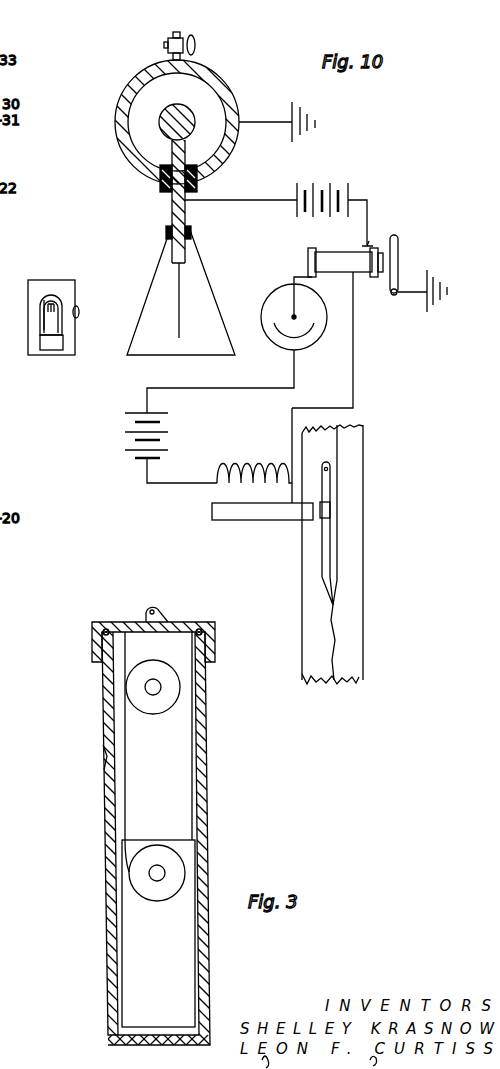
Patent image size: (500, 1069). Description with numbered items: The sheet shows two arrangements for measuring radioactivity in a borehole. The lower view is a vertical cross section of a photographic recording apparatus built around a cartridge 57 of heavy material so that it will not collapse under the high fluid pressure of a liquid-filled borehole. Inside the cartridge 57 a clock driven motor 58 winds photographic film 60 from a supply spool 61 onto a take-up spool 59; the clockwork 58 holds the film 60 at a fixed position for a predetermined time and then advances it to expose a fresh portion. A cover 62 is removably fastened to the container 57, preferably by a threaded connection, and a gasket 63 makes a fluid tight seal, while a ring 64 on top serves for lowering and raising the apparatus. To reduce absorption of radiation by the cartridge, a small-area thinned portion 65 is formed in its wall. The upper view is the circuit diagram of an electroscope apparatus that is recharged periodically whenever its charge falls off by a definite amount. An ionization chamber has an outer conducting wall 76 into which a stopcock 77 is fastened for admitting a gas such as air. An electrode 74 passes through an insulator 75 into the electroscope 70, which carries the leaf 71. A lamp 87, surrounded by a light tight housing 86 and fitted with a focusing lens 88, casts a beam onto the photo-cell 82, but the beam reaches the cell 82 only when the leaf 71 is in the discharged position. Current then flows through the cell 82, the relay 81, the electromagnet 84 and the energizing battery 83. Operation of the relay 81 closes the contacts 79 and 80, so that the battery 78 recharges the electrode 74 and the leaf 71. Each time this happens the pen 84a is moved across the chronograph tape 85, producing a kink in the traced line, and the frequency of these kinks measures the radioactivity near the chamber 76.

In FIG. 3, the cartridge 57 is at (208, 831).
In FIG. 3, the clock driven motor 58 is at (158, 933).
In FIG. 3, the spool 59 is at (157, 873).
In FIG. 3, the photographic film 60 is at (128, 773).
In FIG. 3, the spool 61 is at (153, 696).
In FIG. 3, the cover 62 is at (217, 651).
In FIG. 3, the gasket 63 is at (216, 623).
In FIG. 3, the ring 64 is at (163, 604).
In FIG. 3, the thinned portion 65 is at (107, 763).
In FIG. 10, the electroscope 70 is at (228, 307).
In FIG. 10, the leaf 71 is at (184, 313).
In FIG. 10, the electrode 74 is at (195, 116).
In FIG. 10, the insulator 75 is at (198, 186).
In FIG. 10, the outer conducting wall 76 is at (232, 87).
In FIG. 10, the stopcock 77 is at (197, 42).
In FIG. 10, the battery 78 is at (276, 203).
In FIG. 10, the contact 79 is at (377, 237).
In FIG. 10, the contact 80 is at (400, 251).
In FIG. 10, the relay 81 is at (345, 262).
In FIG. 10, the photo-cell 82 is at (312, 347).
In FIG. 10, the energizing battery 83 is at (154, 448).
In FIG. 10, the electromagnet 84 is at (282, 396).
In FIG. 10, the pen 84a is at (343, 526).
In FIG. 10, the chronograph tape 85 is at (368, 662).
In FIG. 10, the light tight housing 86 is at (51, 309).
In FIG. 10, the lamp 87 is at (38, 322).
In FIG. 10, the focusing lens 88 is at (78, 316).